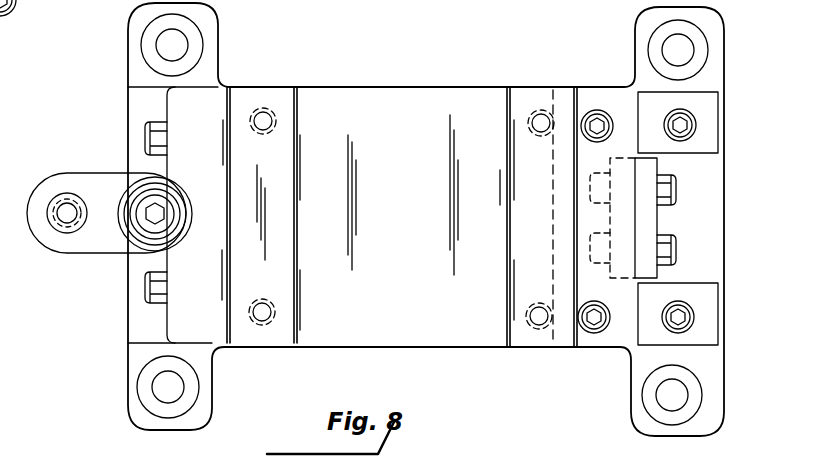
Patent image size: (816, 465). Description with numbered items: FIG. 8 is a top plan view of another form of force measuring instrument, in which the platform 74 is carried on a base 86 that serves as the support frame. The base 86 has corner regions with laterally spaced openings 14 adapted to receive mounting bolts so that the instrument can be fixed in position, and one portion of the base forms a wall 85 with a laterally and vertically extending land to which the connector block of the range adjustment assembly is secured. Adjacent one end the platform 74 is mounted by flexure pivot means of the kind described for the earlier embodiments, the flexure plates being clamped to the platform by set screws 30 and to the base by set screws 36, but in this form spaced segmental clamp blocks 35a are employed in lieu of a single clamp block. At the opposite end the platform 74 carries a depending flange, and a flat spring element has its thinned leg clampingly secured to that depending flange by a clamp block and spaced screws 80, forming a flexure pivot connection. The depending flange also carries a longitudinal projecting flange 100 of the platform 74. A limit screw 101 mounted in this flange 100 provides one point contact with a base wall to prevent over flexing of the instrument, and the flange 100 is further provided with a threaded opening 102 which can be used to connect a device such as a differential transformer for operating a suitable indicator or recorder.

The openings 14 is at (162, 42).
The set screws 30 is at (673, 190).
The segmental clamp blocks 35a is at (712, 146).
The set screws 36 is at (597, 111).
The platform 74 is at (400, 207).
The spaced screws 80 is at (143, 132).
The wall 85 is at (712, 201).
The base 86 is at (213, 357).
The projecting flange 100 is at (50, 172).
The limit screw 101 is at (158, 212).
The threaded opening 102 is at (67, 222).